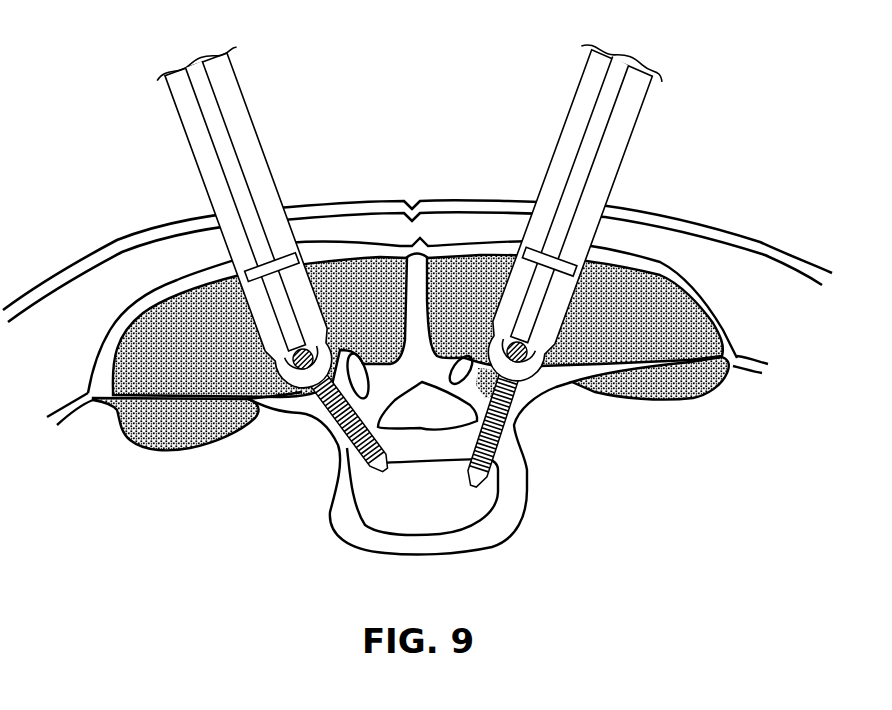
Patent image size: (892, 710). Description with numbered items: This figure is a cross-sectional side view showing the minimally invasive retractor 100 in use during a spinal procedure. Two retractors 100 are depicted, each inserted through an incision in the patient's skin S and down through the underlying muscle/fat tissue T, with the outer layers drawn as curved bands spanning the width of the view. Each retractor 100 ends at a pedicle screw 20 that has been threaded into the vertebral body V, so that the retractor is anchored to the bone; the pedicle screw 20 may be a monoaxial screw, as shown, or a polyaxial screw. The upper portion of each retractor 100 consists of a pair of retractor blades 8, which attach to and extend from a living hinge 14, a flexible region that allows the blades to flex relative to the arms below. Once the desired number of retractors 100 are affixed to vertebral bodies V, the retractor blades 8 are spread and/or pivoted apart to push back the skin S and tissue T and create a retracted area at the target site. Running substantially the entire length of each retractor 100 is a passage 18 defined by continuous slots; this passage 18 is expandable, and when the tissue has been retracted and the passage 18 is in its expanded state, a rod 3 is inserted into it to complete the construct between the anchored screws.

The minimally invasive retractor 100 is at (416, 220).
The retractor blade 8 is at (233, 99).
The passage 18 is at (237, 176).
The living hinge 14 is at (301, 256).
The rod 3 is at (286, 370).
The pedicle screw 20 is at (356, 453).
The skin S is at (752, 234).
The muscle/fat tissue T is at (689, 324).
The vertebral body V is at (505, 506).